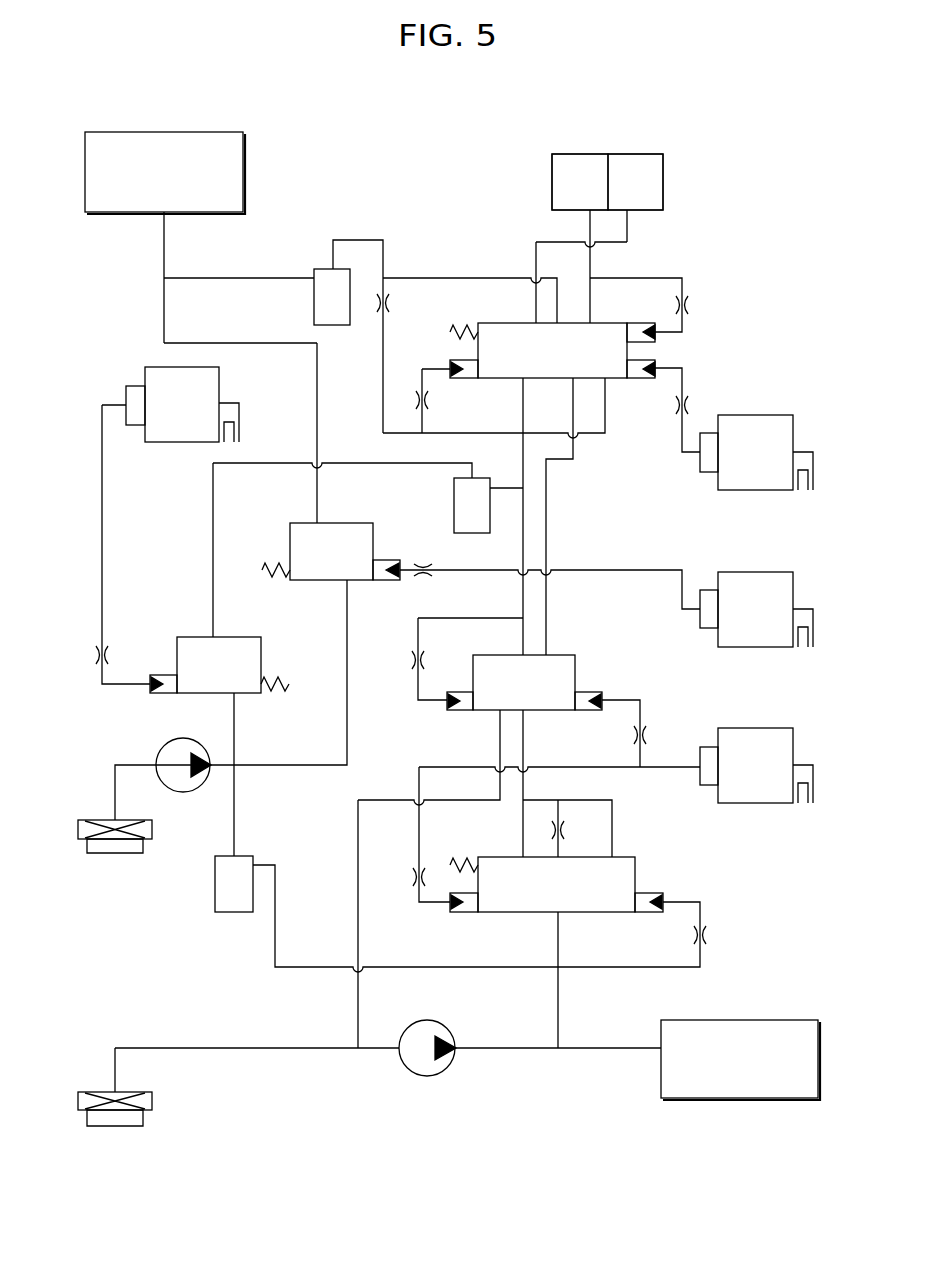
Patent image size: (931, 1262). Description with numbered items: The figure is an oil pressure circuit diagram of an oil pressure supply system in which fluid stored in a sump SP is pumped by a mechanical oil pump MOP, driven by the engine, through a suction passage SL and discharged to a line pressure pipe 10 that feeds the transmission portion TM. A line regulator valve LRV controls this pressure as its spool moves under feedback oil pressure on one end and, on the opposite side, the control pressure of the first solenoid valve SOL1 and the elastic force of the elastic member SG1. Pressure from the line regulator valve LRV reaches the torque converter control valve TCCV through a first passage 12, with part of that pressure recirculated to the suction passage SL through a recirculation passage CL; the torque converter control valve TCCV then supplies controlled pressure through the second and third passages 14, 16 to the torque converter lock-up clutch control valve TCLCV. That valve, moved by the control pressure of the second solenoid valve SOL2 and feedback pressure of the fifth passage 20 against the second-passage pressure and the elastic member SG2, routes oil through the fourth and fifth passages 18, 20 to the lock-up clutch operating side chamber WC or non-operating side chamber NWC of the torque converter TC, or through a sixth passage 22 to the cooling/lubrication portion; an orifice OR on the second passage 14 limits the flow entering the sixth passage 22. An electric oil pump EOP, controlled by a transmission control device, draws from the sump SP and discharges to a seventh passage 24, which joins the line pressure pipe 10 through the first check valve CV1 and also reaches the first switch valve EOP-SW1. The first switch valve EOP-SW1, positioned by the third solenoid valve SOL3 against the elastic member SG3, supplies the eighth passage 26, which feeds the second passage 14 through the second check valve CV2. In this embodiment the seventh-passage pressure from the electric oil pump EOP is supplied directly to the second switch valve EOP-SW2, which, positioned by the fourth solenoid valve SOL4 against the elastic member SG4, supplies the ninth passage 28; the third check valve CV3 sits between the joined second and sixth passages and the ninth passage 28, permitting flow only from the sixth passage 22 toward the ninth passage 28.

The third check valve CV3 is at (314, 311).
The sixth passage 22 is at (424, 276).
The fourth passage 18 is at (536, 258).
The fifth passage 20 is at (590, 264).
The torque converter TC is at (684, 154).
The lock-up clutch non-operating side chamber NWC is at (552, 182).
The lock-up clutch operating side chamber WC is at (663, 181).
The elastic member SG2 is at (450, 337).
The orifice OR is at (377, 318).
The torque converter lock-up clutch control valve TCLCV is at (612, 380).
The second solenoid valve SOL2 is at (756, 452).
The third solenoid valve SOL3 is at (182, 404).
The fourth solenoid valve SOL4 is at (756, 609).
The first solenoid valve SOL1 is at (756, 765).
The ninth passage 28 is at (317, 410).
The eighth passage 26 is at (213, 514).
The second check valve CV2 is at (454, 501).
The elastic member SG4 is at (276, 560).
The second switch valve EOP-SW2 is at (331, 582).
The first switch valve EOP-SW1 is at (192, 636).
The elastic member SG3 is at (290, 686).
The second passage 14 is at (523, 594).
The third passage 16 is at (546, 594).
The torque converter control valve TCCV is at (577, 672).
The first passage 12 is at (523, 733).
The recirculation passage CL is at (384, 798).
The elastic member SG1 is at (465, 858).
The line regulator valve LRV is at (637, 867).
The electric oil pump EOP is at (180, 784).
The seventh passage 24 is at (236, 805).
The first check valve CV1 is at (215, 900).
The sump SP is at (115, 855).
The suction passage SL is at (218, 1050).
The mechanical oil pump MOP is at (428, 1068).
The line pressure pipe 10 is at (533, 1050).
The transmission portion TM is at (738, 1020).